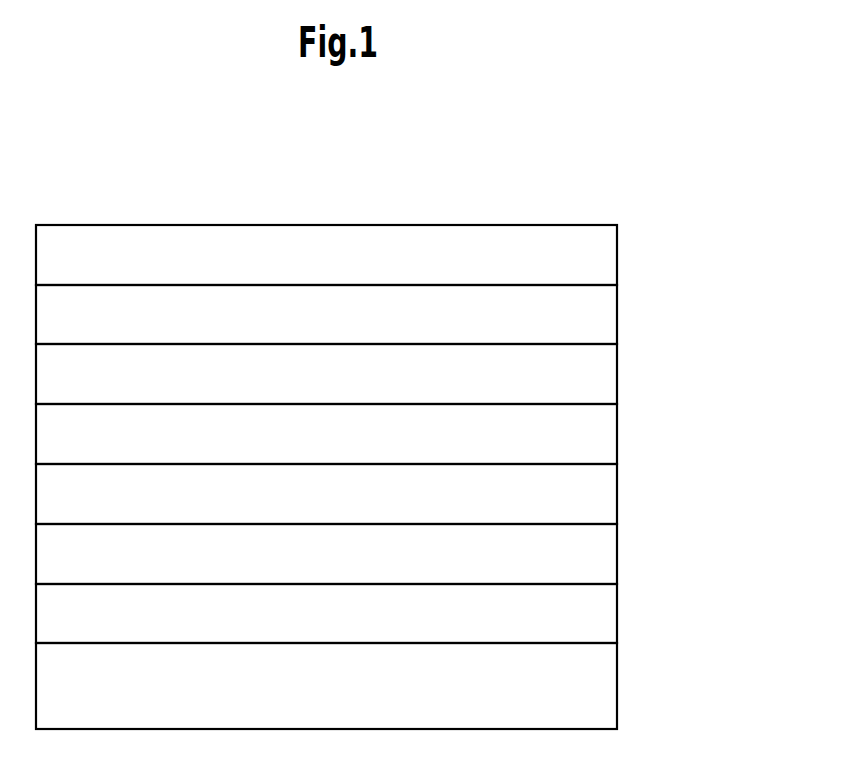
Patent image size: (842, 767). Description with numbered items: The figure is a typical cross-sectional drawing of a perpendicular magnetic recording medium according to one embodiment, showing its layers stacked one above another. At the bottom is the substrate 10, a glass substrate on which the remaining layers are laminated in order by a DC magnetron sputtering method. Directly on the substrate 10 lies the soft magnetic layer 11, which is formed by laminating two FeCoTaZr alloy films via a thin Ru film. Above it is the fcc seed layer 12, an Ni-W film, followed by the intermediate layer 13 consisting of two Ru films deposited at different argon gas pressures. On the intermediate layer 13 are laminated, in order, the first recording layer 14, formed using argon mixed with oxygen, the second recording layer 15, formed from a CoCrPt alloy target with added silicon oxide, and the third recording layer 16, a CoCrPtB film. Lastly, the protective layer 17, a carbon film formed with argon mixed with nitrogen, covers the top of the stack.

The substrate 10 is at (583, 687).
The soft magnetic layer 11 is at (583, 613).
The fcc seed layer 12 is at (583, 553).
The intermediate layer 13 is at (583, 493).
The first recording layer 14 is at (583, 433).
The second recording layer 15 is at (583, 373).
The third recording layer 16 is at (583, 313).
The protective layer 17 is at (583, 254).